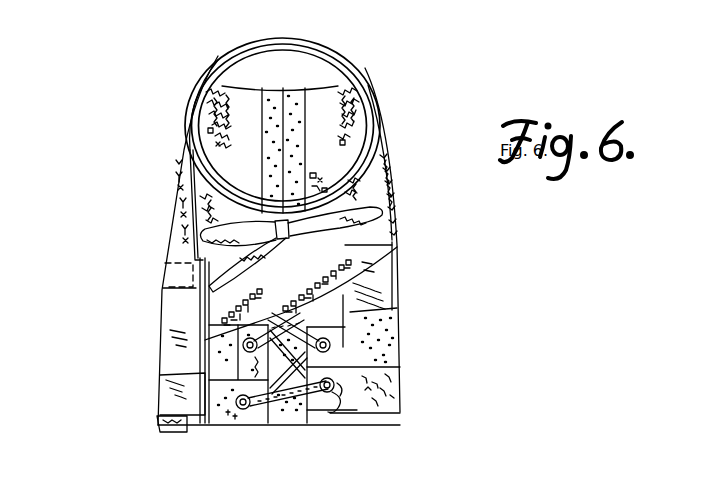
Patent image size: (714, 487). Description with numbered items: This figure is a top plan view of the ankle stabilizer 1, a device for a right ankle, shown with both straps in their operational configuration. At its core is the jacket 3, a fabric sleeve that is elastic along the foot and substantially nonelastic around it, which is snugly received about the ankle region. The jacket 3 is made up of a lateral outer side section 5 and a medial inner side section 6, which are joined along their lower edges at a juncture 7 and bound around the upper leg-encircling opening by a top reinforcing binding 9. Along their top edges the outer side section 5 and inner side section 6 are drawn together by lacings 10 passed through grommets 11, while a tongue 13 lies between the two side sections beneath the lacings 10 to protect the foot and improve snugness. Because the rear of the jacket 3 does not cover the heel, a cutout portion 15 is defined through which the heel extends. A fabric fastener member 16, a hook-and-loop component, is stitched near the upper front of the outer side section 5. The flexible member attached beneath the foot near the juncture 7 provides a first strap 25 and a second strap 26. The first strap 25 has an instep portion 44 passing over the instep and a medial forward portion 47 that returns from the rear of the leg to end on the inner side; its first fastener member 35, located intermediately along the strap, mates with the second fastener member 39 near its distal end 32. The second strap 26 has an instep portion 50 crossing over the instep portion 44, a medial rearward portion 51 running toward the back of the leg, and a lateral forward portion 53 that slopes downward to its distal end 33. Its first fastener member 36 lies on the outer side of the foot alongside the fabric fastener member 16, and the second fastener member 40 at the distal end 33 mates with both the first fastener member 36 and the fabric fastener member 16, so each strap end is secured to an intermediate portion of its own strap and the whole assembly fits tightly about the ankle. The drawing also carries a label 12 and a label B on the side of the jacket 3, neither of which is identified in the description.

The ankle stabilizer 1 is at (120, 187).
The jacket 3 is at (398, 362).
The outer side section 5 is at (236, 423).
The inner side section 6 is at (400, 346).
The juncture 7 is at (276, 103).
The top reinforcing binding 9 is at (343, 72).
The lacings 10 is at (370, 214).
The grommets 11 is at (338, 418).
The quarter textured region 12 is at (334, 353).
The tongue 13 is at (306, 418).
The cutout portion 15 is at (312, 90).
The fabric fastener member 16 is at (203, 432).
The first strap 25 is at (395, 298).
The second strap 26 is at (178, 338).
The distal end 32 is at (387, 276).
The distal end 33 is at (165, 405).
The first fastener member 35 is at (398, 322).
The first fastener member 36 is at (216, 310).
The second fastener member 39 is at (345, 320).
The second fastener member 40 is at (168, 378).
The instep portion 44 is at (337, 300).
The medial forward portion 47 is at (383, 256).
The instep portion 50 is at (272, 262).
The medial rearward portion 51 is at (383, 150).
The lateral forward portion 53 is at (185, 157).
The bottom edge B is at (402, 412).